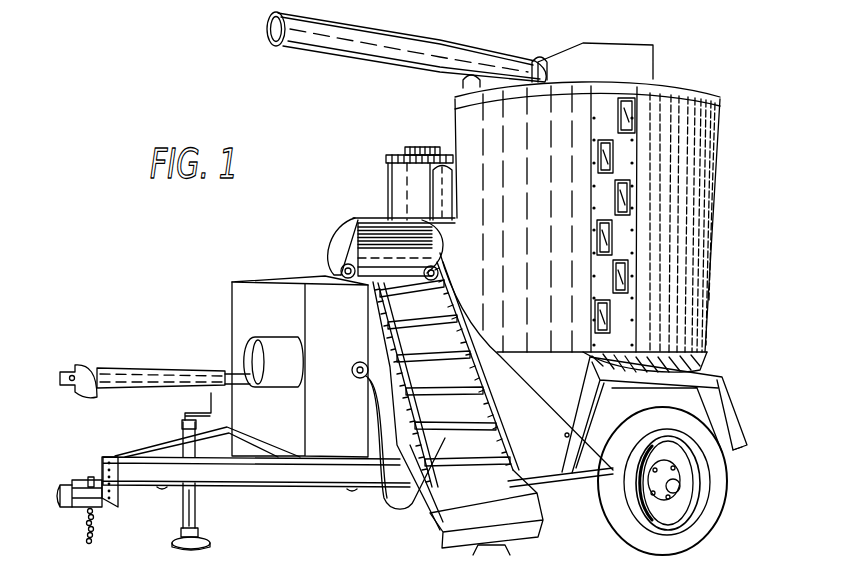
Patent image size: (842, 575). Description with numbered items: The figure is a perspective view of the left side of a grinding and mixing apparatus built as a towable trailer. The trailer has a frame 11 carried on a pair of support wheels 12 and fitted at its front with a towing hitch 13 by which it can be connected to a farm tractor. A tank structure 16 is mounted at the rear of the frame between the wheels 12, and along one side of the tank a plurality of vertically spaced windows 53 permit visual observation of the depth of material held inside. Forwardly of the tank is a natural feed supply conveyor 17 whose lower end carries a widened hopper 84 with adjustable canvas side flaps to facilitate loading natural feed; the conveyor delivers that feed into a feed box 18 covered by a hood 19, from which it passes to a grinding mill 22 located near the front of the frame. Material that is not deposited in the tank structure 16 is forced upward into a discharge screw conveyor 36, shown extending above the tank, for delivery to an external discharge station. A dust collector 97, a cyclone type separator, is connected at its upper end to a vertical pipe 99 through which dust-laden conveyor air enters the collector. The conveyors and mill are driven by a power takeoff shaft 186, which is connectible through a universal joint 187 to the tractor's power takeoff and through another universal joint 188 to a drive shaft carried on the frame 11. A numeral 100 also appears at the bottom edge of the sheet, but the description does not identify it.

The tank structure 16 is at (626, 207).
The discharge screw conveyor 36 is at (441, 41).
The windows 53 is at (600, 151).
The dust collector 97 is at (392, 173).
The vertical pipe 99 is at (450, 167).
The feed box 18 is at (380, 247).
The hood 19 is at (337, 244).
The grinding mill 22 is at (237, 391).
The universal joint 188 is at (252, 388).
The power takeoff shaft 186 is at (172, 370).
The universal joint 187 is at (70, 370).
The frame 11 is at (269, 488).
The towing hitch 13 is at (79, 506).
The natural feed supply conveyor 17 is at (412, 529).
The widened hopper 84 is at (555, 500).
The support wheels 12 is at (667, 548).
The support 100 is at (108, 573).